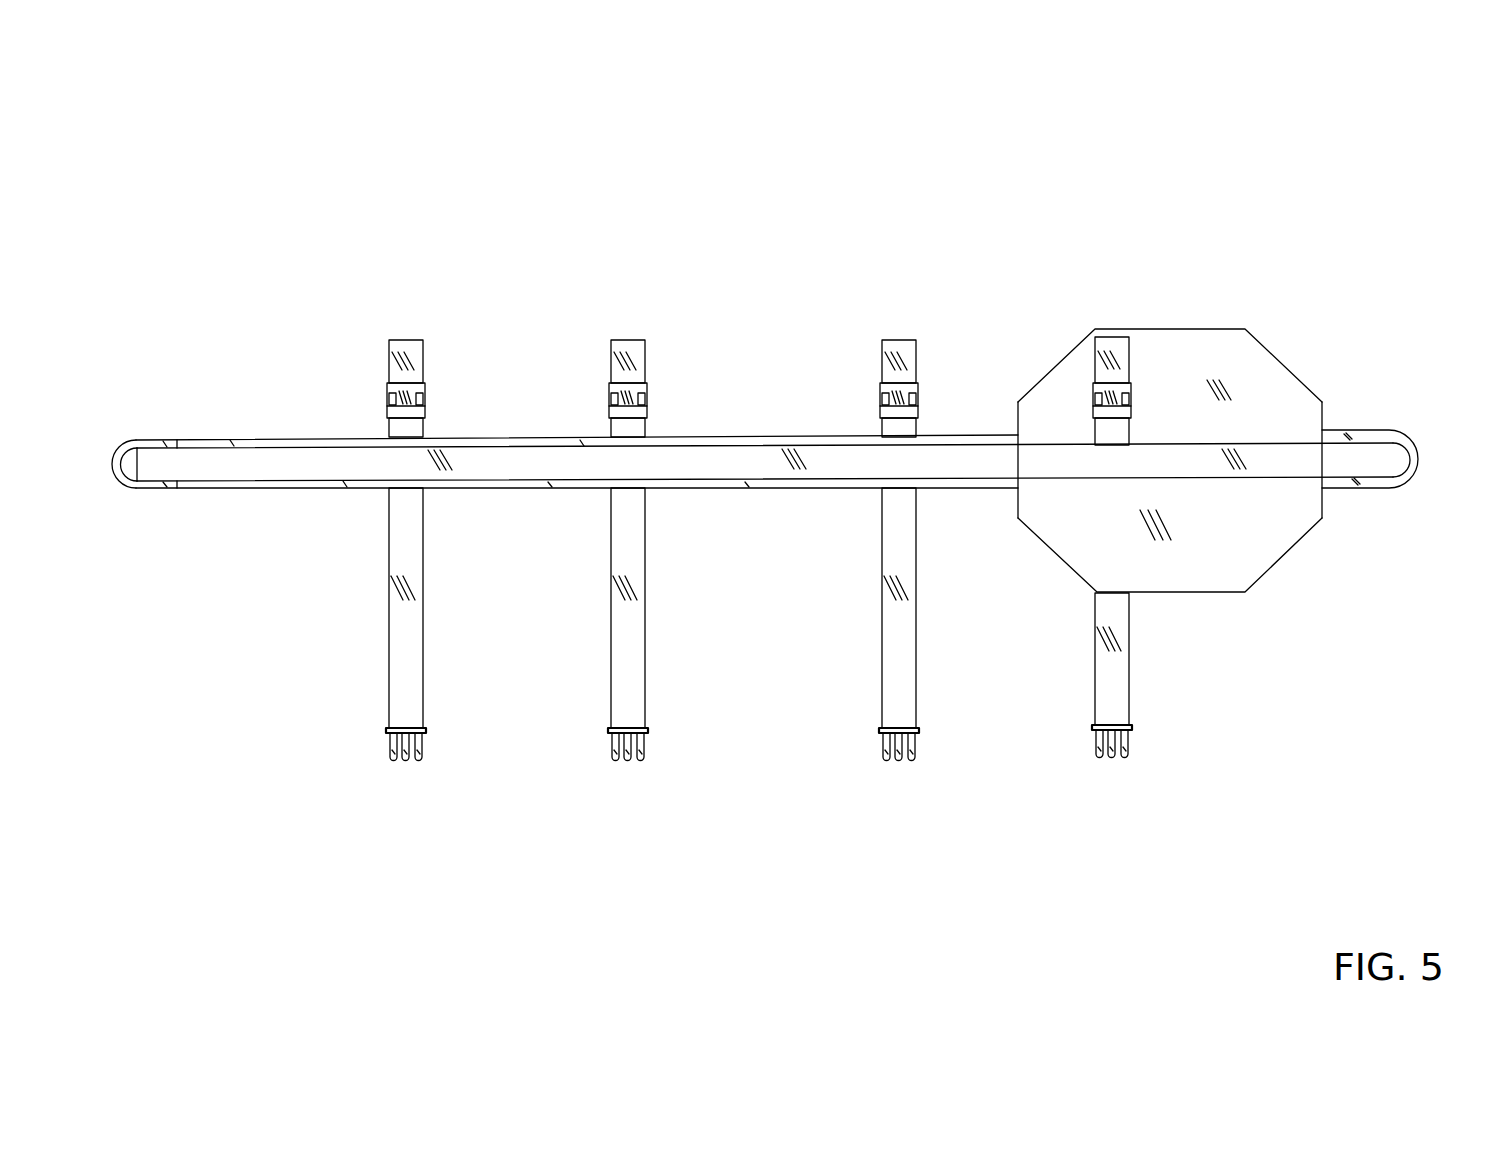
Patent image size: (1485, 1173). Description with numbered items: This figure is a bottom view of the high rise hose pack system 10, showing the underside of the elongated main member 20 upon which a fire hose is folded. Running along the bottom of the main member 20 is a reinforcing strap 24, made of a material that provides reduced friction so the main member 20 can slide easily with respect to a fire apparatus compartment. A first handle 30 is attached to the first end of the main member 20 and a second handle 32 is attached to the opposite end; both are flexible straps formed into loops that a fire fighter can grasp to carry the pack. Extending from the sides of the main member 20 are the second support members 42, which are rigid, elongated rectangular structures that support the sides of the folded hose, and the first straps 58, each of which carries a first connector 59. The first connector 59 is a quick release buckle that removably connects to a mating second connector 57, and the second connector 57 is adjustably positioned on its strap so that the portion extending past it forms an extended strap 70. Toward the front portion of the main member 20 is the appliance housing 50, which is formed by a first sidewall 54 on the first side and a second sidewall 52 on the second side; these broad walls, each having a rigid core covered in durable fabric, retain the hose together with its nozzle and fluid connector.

The high rise hose pack system 10 is at (226, 138).
The main member 20 is at (793, 465).
The reinforcing strap 24 is at (247, 452).
The first handle 30 is at (135, 492).
The second handle 32 is at (1382, 488).
The second support members 42 is at (425, 345).
The appliance housing 50 is at (1213, 502).
The second sidewall 52 is at (1276, 563).
The first sidewall 54 is at (1283, 373).
The second connector 57 is at (389, 758).
The first strap 58 is at (390, 430).
The first connector 59 is at (647, 388).
The extended strap 70 is at (637, 652).